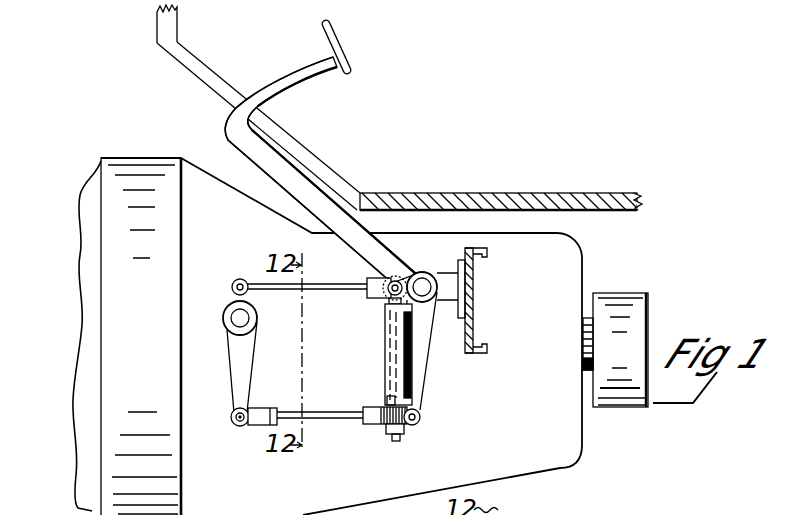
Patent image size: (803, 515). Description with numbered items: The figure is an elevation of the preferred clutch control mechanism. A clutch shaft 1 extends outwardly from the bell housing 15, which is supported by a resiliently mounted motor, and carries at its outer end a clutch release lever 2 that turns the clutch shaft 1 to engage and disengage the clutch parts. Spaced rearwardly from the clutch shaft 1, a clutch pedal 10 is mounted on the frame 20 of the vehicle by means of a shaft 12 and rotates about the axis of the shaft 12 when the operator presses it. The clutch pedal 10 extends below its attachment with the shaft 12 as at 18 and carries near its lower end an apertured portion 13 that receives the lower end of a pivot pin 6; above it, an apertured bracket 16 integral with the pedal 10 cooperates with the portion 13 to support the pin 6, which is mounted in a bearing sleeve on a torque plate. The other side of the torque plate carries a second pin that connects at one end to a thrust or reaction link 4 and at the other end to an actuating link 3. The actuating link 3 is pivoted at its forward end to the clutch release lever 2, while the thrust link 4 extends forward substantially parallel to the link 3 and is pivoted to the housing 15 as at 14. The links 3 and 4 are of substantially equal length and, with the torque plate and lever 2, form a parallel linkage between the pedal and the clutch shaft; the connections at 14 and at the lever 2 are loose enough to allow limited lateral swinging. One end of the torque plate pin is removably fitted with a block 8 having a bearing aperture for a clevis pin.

The clutch shaft 1 is at (238, 318).
The clutch release lever 2 is at (240, 377).
The actuating link 3 is at (333, 422).
The thrust link 4 is at (322, 290).
The pivot pin 6 is at (397, 441).
The block 8 is at (373, 420).
The clutch pedal 10 is at (238, 147).
The shaft 12 is at (422, 287).
The apertured portion 13 is at (387, 400).
The pivotal connection 14 is at (236, 282).
The bell housing 15 is at (130, 340).
The apertured bracket 16 is at (390, 301).
The lower extension of clutch pedal 18 is at (422, 345).
The frame 20 is at (475, 330).